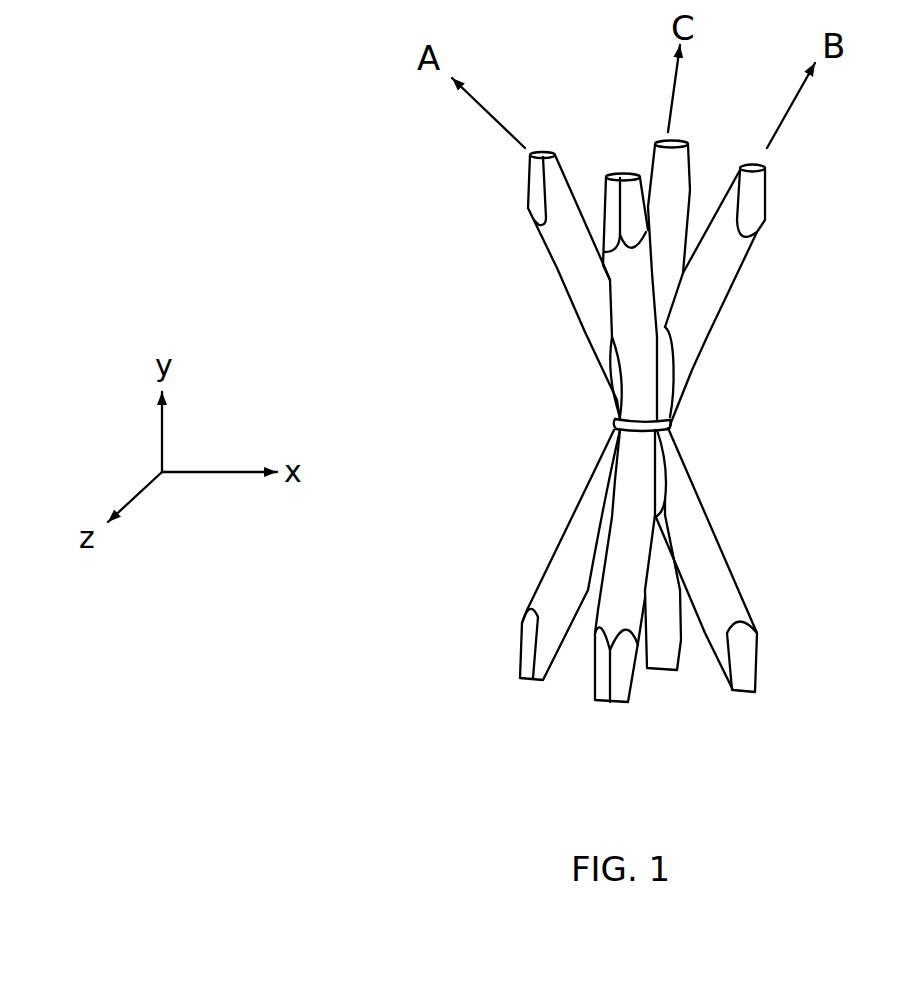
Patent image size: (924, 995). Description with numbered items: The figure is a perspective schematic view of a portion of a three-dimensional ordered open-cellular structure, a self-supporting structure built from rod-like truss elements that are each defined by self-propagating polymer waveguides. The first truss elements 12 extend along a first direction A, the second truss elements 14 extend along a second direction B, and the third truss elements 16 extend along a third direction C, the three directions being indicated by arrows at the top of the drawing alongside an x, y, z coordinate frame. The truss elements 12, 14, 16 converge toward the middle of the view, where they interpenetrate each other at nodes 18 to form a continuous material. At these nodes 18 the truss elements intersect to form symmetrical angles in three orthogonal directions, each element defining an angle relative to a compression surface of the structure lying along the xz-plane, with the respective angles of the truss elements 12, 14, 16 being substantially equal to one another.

The first truss elements 12 is at (530, 220).
The second truss elements 14 is at (765, 235).
The third truss elements 16 is at (607, 712).
The nodes 18 is at (683, 415).